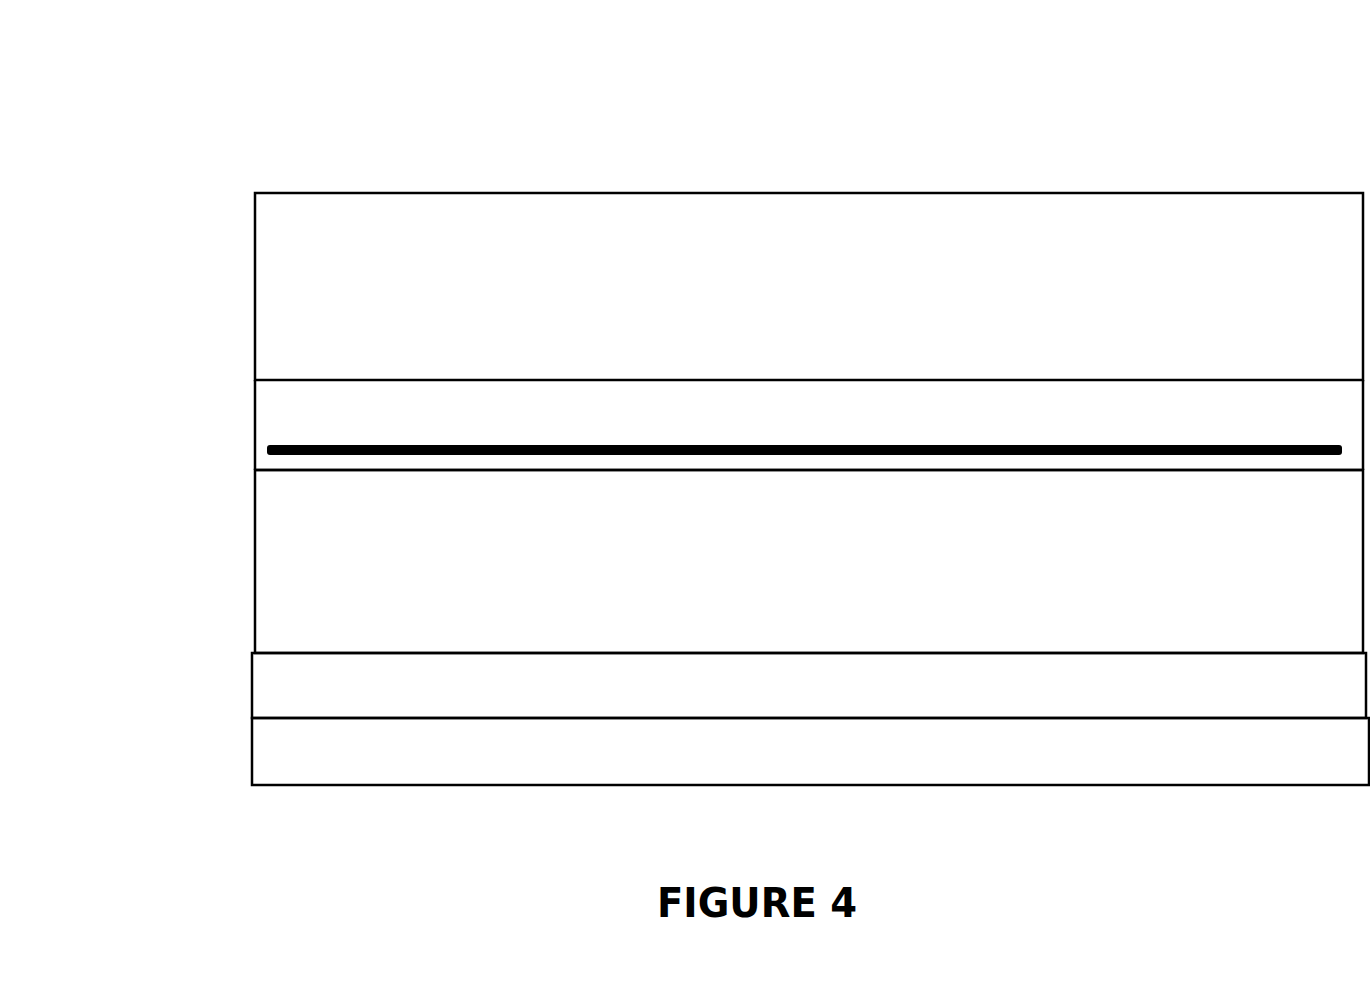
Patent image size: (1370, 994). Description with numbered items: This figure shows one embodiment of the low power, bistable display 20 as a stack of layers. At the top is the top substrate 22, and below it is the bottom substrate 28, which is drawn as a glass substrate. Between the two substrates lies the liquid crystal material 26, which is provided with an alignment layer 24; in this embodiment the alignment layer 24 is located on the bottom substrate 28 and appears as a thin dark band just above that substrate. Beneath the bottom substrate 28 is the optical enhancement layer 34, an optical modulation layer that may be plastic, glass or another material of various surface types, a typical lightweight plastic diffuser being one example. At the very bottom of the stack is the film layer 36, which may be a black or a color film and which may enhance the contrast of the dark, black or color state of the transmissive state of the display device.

The display 20 is at (278, 136).
The top substrate 22 is at (325, 291).
The alignment layer 24 is at (272, 447).
The liquid crystal material 26 is at (262, 460).
The bottom substrate 28 is at (307, 560).
The optical enhancement layer 34 is at (270, 687).
The film layer 36 is at (282, 754).